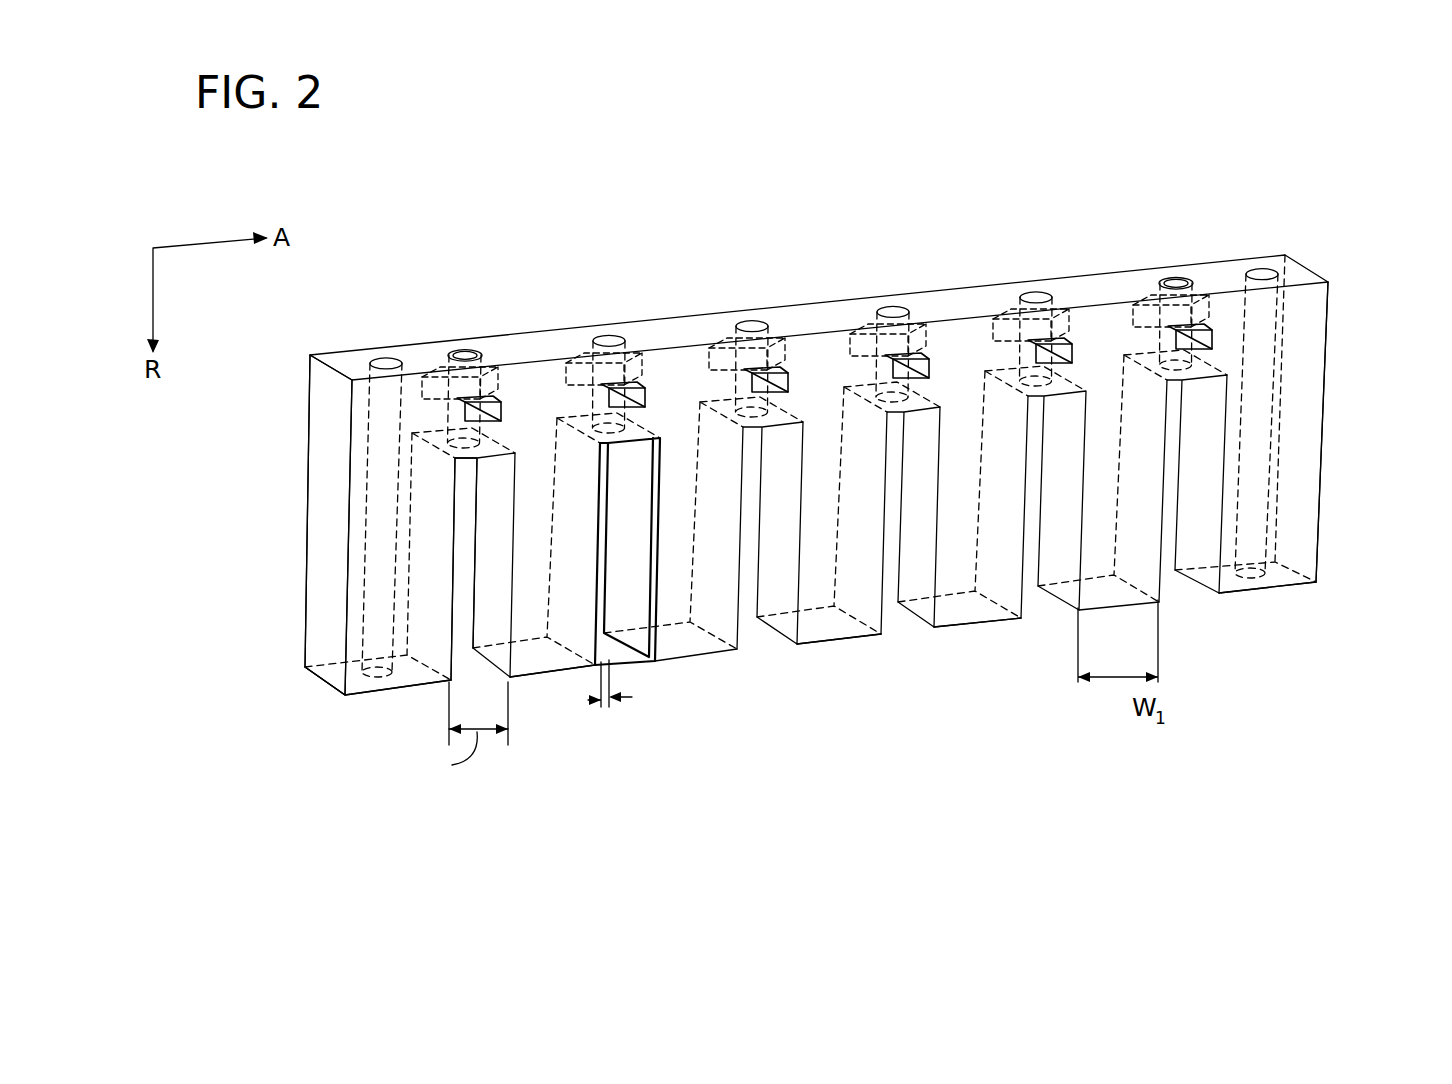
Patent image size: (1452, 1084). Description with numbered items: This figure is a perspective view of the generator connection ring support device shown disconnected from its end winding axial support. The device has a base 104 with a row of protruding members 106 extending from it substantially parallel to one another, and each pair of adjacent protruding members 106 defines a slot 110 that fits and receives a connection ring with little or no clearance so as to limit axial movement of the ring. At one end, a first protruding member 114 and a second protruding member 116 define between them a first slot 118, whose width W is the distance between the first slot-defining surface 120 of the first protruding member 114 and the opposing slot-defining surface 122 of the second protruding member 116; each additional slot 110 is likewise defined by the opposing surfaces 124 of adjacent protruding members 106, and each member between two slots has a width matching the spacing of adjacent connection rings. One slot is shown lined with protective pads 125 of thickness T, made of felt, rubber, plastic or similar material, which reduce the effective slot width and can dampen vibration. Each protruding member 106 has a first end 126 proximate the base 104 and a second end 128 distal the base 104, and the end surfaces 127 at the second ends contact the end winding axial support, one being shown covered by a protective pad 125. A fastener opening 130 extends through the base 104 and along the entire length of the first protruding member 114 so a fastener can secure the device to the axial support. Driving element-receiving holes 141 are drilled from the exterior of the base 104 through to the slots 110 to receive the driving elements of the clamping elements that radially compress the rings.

The base 104 is at (1332, 285).
The protruding members 106 is at (1326, 450).
The slot 110 is at (465, 475).
The first protruding member 114 is at (355, 687).
The second protruding member 116 is at (565, 662).
The first slot 118 is at (465, 537).
The first slot-defining surface 120 is at (478, 713).
The opposing slot-defining surface 122 is at (497, 617).
The opposing surfaces 124 is at (885, 622).
The protective pad 125 is at (653, 665).
The first end 126 is at (1328, 368).
The end surfaces 127 is at (323, 682).
The second end 128 is at (1312, 582).
The fastener opening 130 is at (373, 410).
The driving element-receiving holes 141 is at (1205, 305).